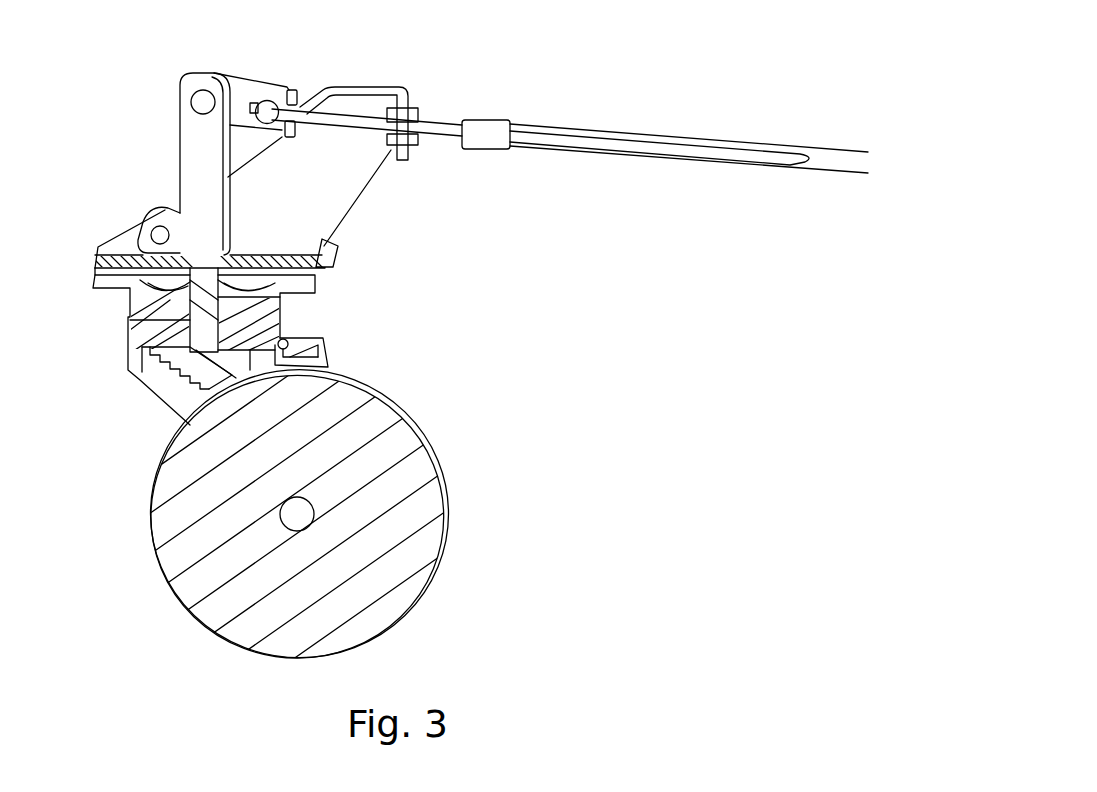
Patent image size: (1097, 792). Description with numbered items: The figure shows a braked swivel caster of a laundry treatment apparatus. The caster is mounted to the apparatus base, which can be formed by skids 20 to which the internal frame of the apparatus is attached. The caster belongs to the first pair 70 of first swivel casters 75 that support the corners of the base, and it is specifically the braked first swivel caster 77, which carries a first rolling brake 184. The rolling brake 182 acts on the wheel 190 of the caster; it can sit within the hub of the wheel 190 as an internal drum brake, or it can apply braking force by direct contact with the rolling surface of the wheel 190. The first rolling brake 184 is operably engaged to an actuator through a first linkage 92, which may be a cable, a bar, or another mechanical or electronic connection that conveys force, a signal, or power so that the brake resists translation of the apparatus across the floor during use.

The skids 20 is at (332, 193).
The first linkage 92 is at (585, 128).
The first pair of first swivel casters 70 is at (328, 367).
The first swivel caster 75 is at (328, 367).
The braked first swivel caster 77 is at (328, 367).
The rolling brake 182 is at (210, 372).
The first rolling brake 184 is at (190, 360).
The wheel 190 is at (177, 557).